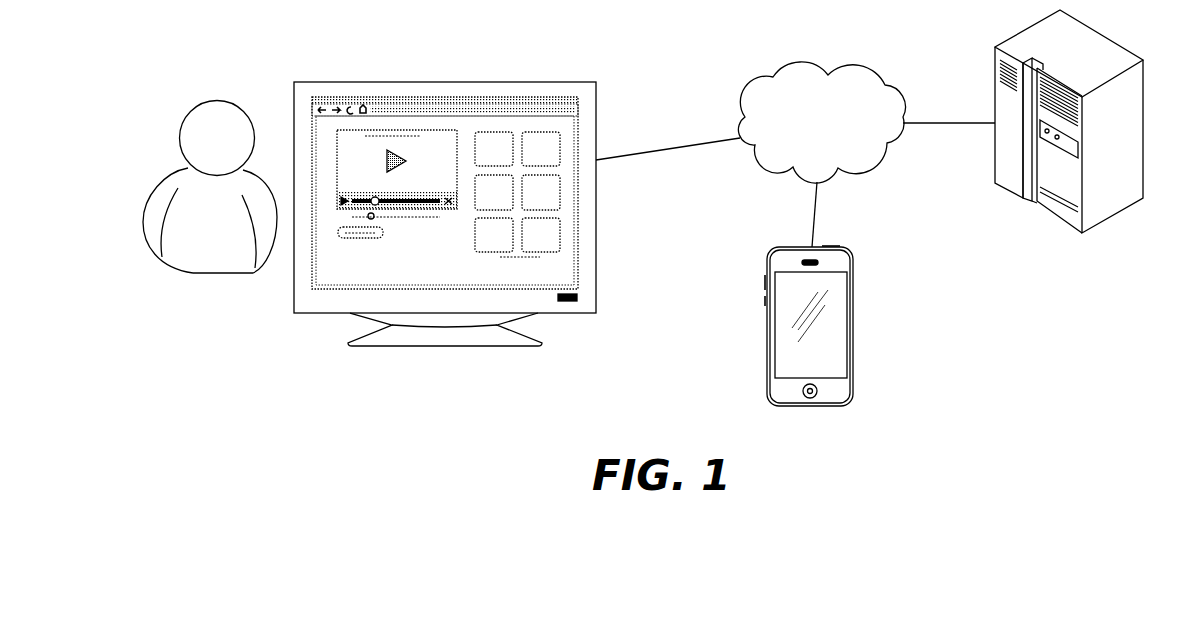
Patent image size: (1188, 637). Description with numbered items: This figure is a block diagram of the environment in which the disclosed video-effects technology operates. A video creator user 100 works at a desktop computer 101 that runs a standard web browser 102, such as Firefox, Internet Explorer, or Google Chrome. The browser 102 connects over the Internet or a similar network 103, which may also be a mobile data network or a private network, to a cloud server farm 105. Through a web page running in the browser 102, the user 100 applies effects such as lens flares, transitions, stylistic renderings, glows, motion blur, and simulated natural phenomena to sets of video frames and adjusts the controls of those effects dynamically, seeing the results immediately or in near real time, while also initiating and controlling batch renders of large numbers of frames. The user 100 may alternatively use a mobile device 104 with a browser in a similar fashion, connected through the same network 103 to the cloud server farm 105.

The video creator user 100 is at (216, 100).
The desktop computer 101 is at (437, 82).
The web browser 102 is at (435, 267).
The Internet or similar network 103 is at (806, 62).
The mobile device 104 is at (853, 320).
The cloud server farm 105 is at (1058, 223).